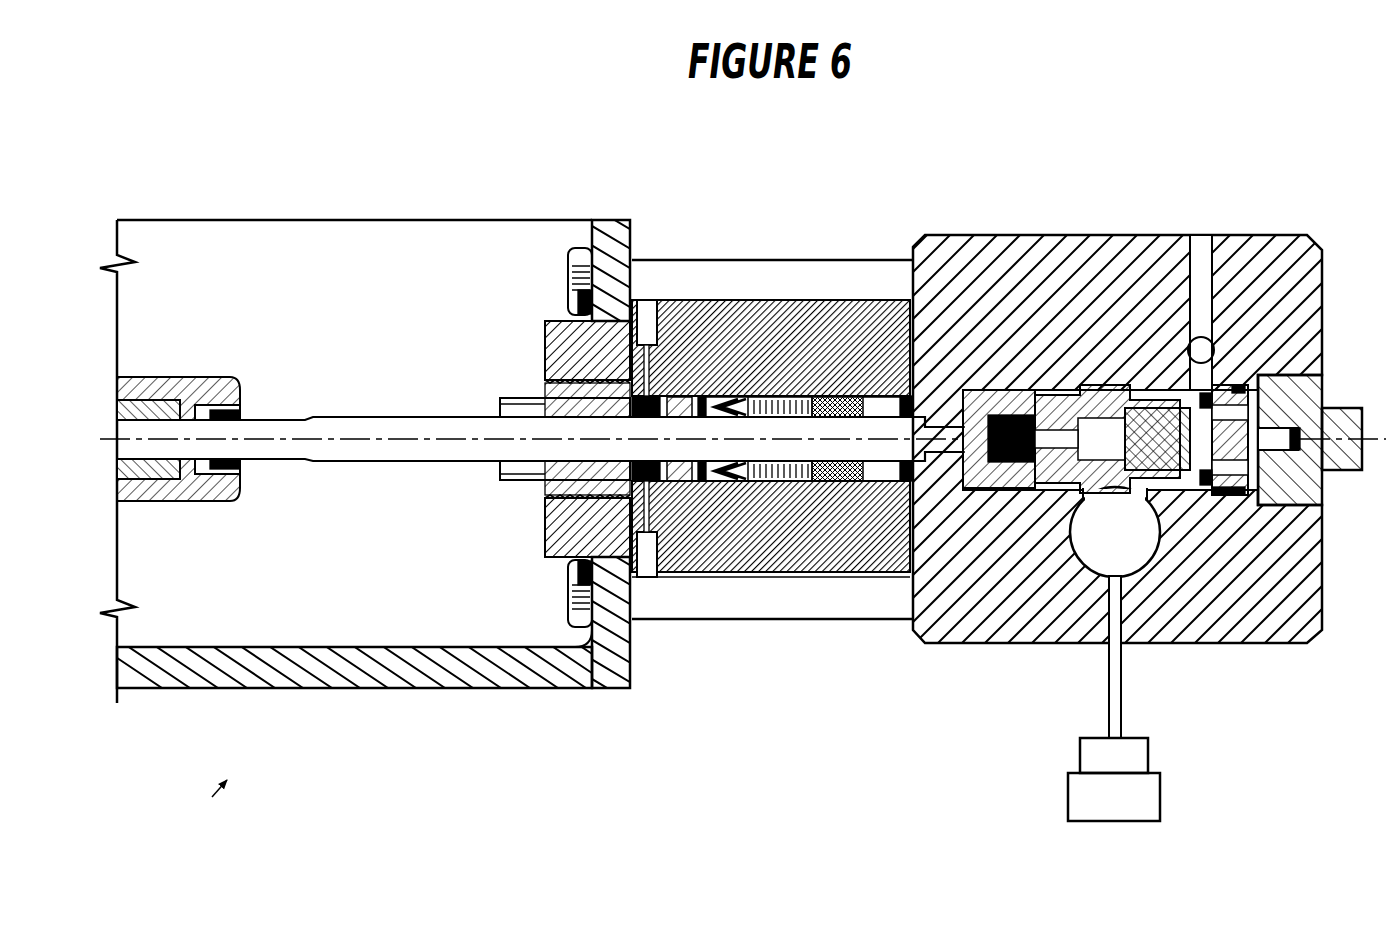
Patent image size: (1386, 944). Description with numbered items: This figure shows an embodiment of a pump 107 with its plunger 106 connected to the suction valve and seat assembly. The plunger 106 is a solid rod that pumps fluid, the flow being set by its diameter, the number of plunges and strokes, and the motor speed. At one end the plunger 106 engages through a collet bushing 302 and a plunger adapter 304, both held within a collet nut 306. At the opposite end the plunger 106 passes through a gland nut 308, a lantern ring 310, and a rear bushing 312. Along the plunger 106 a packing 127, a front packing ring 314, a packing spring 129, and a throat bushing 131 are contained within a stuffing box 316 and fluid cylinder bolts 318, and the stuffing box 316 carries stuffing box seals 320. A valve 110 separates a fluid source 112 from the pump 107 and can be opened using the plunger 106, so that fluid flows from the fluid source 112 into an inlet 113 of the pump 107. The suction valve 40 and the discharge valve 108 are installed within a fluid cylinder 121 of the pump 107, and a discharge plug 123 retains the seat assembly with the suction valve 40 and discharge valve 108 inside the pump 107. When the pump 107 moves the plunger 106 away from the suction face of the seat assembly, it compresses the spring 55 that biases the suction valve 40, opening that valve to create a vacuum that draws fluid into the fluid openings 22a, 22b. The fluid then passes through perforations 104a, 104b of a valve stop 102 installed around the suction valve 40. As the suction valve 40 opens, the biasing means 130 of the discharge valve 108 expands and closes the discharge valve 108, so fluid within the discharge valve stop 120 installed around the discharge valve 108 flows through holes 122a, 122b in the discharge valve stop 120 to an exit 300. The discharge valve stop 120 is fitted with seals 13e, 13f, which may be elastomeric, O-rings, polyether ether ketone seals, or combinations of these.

The plunger adapter 304 is at (150, 400).
The collet nut 306 is at (222, 377).
The collet bushing 302 is at (225, 492).
The plunger 106 is at (400, 417).
The gland nut 308 is at (525, 398).
The lantern ring 310 is at (648, 398).
The rear bushing 312 is at (685, 482).
The packing 127 is at (722, 396).
The packing spring 129 is at (777, 396).
The front packing ring 314 is at (750, 482).
The stuffing box 316 is at (842, 577).
The throat bushing 131 is at (853, 396).
The stuffing box seals 320 is at (905, 482).
The fluid cylinder bolts 318 is at (812, 260).
The valve stop 102 is at (997, 390).
The inlet 113 is at (1050, 560).
The exit 300 is at (1200, 234).
The fluid opening 22b is at (1196, 338).
The fluid opening 22a is at (1090, 490).
The discharge valve 108 is at (1165, 500).
The discharge valve stop 120 is at (1262, 375).
The discharge plug 123 is at (1345, 408).
The spring 55 is at (1000, 488).
The fluid cylinder 121 is at (1024, 395).
The suction valve 40 is at (1120, 390).
The biasing means 130 is at (1230, 385).
The hole 122b is at (1208, 392).
The hole 122a is at (1208, 487).
The seal 13f is at (1243, 497).
The seal 13e is at (1220, 497).
The perforation 104a is at (905, 410).
The perforation 104b is at (905, 468).
The valve 110 is at (1148, 752).
The fluid source 112 is at (1160, 798).
The pump 107 is at (212, 803).